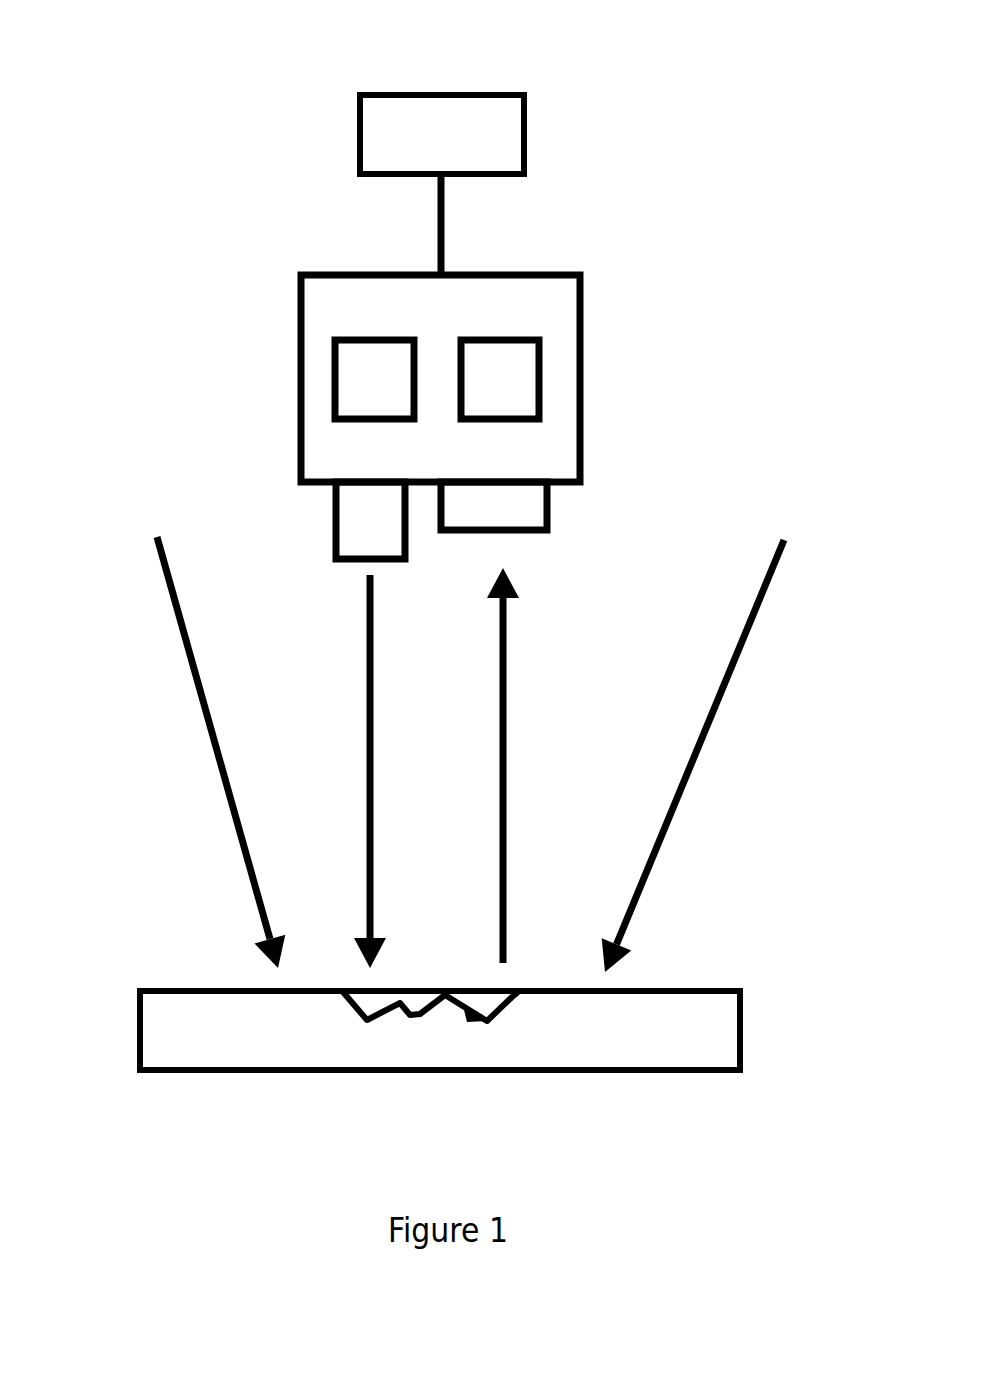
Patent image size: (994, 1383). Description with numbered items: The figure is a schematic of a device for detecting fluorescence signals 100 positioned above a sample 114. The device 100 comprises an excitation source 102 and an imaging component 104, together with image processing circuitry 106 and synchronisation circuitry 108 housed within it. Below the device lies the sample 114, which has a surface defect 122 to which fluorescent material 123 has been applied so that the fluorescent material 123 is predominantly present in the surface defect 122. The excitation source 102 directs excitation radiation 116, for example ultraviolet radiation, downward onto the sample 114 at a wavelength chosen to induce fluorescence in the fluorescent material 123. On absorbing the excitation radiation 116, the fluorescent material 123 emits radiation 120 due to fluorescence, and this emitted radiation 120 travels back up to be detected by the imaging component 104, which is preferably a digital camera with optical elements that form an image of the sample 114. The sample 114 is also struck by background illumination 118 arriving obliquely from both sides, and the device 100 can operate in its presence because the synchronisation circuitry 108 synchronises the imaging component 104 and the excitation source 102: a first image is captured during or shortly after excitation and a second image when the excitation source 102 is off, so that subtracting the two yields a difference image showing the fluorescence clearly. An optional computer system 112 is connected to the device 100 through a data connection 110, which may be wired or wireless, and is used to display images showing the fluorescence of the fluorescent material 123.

The device for detecting fluorescence signals 100 is at (583, 305).
The excitation source 102 is at (333, 527).
The imaging component 104 is at (550, 527).
The image processing circuitry 106 is at (542, 409).
The synchronisation circuitry 108 is at (332, 368).
The data connection 110 is at (437, 223).
The computer system 112 is at (527, 125).
The sample 114 is at (233, 1073).
The excitation radiation 116 is at (380, 832).
The background illumination 118 is at (220, 770).
The emitted radiation 120 is at (507, 749).
The surface defect 122 is at (443, 997).
The fluorescent material 123 is at (490, 1022).